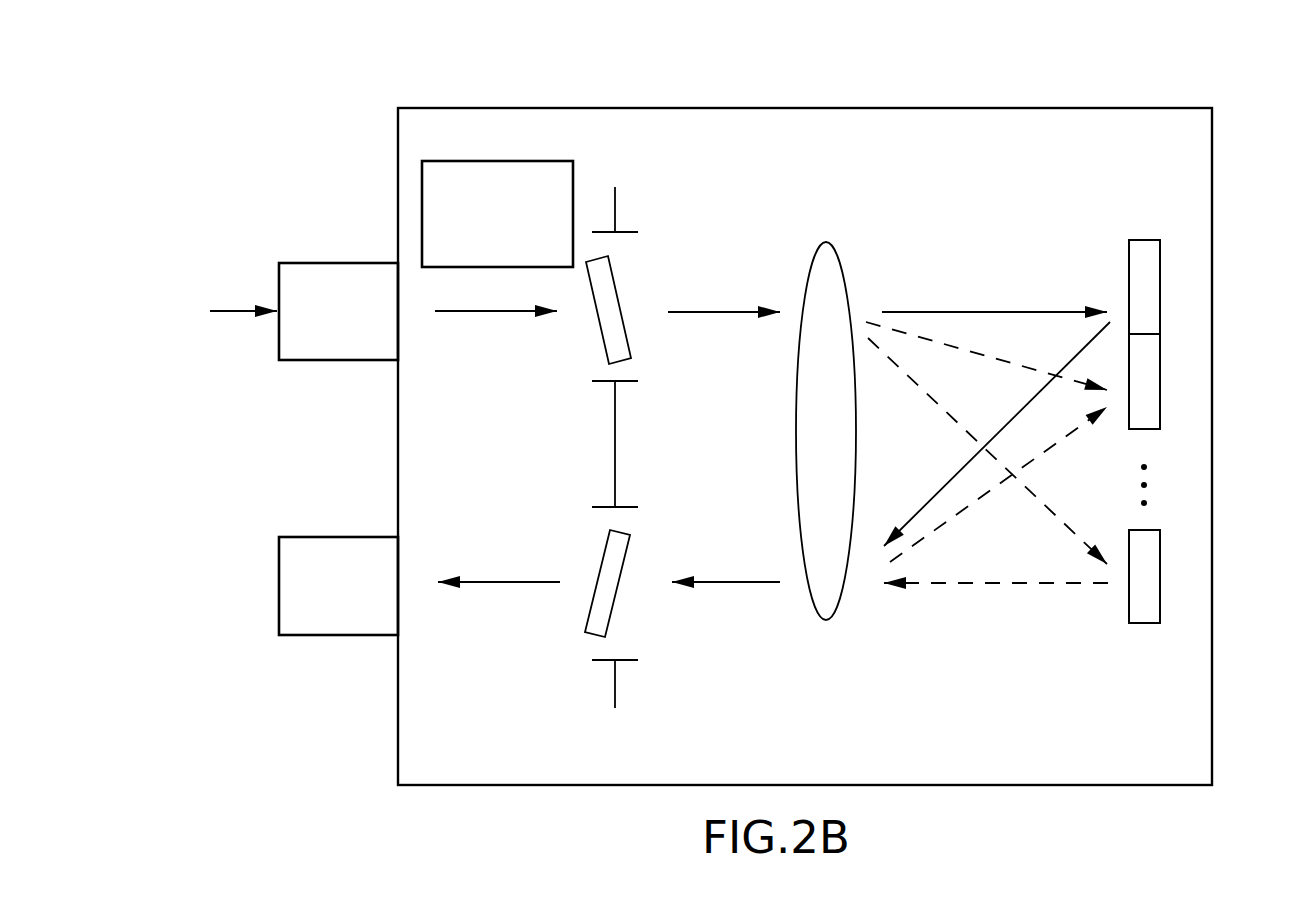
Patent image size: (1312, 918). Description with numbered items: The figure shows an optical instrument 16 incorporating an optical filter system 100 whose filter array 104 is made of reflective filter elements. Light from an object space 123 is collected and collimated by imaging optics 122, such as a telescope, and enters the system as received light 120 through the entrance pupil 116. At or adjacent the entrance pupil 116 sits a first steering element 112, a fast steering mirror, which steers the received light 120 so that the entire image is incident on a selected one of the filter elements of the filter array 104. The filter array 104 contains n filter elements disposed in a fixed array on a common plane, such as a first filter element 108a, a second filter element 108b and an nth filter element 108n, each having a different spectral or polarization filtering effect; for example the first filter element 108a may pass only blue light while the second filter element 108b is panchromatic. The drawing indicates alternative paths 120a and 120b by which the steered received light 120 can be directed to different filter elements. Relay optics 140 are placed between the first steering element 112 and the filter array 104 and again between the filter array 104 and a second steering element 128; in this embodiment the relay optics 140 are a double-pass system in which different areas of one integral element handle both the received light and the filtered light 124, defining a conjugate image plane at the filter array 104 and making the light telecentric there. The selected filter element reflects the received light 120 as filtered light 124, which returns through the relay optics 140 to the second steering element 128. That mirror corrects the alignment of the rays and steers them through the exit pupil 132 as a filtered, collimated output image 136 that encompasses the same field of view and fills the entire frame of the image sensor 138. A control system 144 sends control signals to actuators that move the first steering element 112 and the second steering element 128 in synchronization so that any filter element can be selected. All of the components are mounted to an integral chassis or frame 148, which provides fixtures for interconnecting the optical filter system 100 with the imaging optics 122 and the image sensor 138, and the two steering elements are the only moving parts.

The optical instrument 16 is at (451, 88).
The optical filter system 100 is at (1013, 88).
The filter array 104 is at (1143, 240).
The first filter element 108a is at (1143, 292).
The second filter element 108b is at (1143, 385).
The nth filter element 108n is at (1143, 598).
The first steering element 112 is at (617, 297).
The entrance pupil 116 is at (628, 232).
The received light 120 is at (497, 312).
The first light path 120a is at (988, 309).
The second light path 120b is at (955, 350).
The imaging optics 122 is at (338, 360).
The object space 123 is at (160, 345).
The filtered light 124 is at (928, 500).
The second steering element 128 is at (612, 610).
The exit pupil 132 is at (603, 660).
The output image 136 is at (497, 582).
The image sensor 138 is at (338, 635).
The relay optics 140 is at (825, 243).
The control system 144 is at (498, 161).
The frame 148 is at (685, 108).